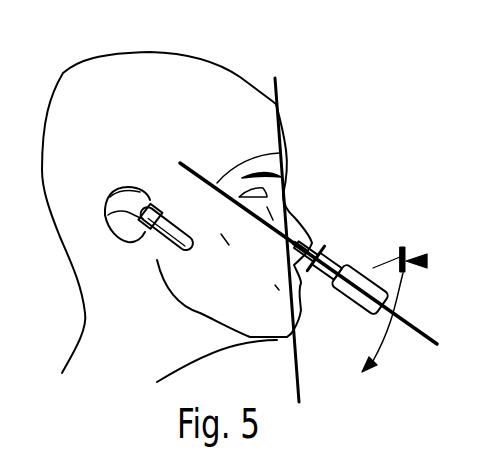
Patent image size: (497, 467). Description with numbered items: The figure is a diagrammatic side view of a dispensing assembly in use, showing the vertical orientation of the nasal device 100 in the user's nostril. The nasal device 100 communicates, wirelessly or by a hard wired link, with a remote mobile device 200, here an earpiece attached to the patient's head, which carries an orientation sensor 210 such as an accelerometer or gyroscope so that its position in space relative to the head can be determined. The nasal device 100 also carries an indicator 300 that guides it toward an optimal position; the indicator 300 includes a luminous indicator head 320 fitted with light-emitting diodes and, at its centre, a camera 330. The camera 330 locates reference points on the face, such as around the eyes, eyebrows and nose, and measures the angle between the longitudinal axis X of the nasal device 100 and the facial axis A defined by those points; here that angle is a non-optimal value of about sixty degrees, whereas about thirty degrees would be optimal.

The nasal device 100 is at (349, 262).
The remote mobile device 200 is at (165, 247).
The orientation sensor 210 is at (115, 239).
The indicator 300 is at (403, 292).
The luminous indicator head 320 is at (427, 261).
The camera 330 is at (399, 258).
The axis of the face A is at (277, 97).
The longitudinal axis of the nasal device X is at (186, 172).